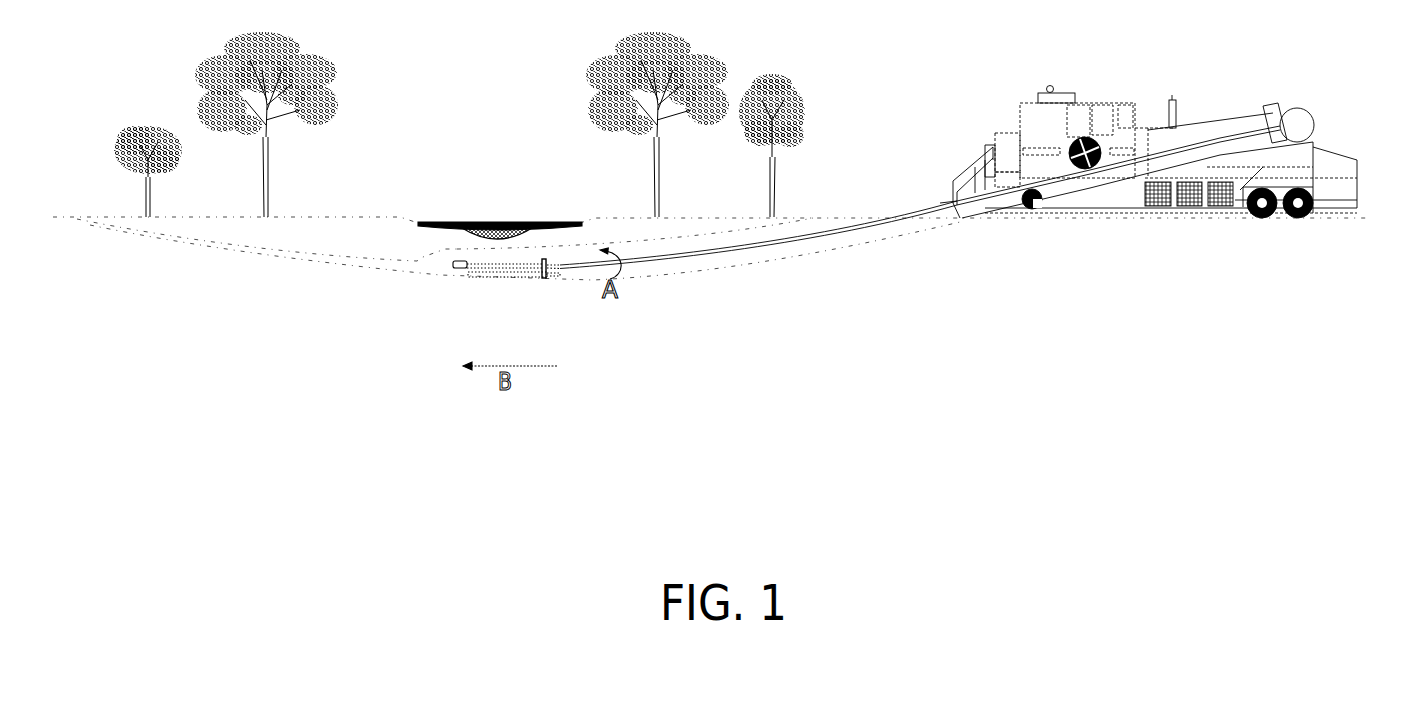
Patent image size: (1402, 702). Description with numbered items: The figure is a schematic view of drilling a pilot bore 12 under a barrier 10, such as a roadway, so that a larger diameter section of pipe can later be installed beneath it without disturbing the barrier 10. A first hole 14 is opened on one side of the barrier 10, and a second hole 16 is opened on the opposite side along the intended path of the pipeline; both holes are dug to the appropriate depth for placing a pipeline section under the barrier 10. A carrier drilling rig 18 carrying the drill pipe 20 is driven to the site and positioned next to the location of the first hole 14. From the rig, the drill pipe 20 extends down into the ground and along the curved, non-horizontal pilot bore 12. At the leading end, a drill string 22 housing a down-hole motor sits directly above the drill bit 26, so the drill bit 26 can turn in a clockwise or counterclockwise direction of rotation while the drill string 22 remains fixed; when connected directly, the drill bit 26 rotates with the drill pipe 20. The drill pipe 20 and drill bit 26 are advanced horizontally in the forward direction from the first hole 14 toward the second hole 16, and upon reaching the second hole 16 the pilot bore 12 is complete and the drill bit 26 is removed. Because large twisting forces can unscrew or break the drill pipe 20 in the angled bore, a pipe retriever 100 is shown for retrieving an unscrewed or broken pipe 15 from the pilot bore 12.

The barrier 10 is at (512, 221).
The pilot bore 12 is at (728, 263).
The first hole 14 is at (828, 212).
The unscrewed or broken pipe 15 is at (505, 278).
The second hole 16 is at (92, 214).
The carrier drilling rig 18 is at (1108, 92).
The drill pipe 20 is at (862, 226).
The drill string 22 is at (475, 268).
The drill bit 26 is at (448, 265).
The pipe retriever 100 is at (543, 281).